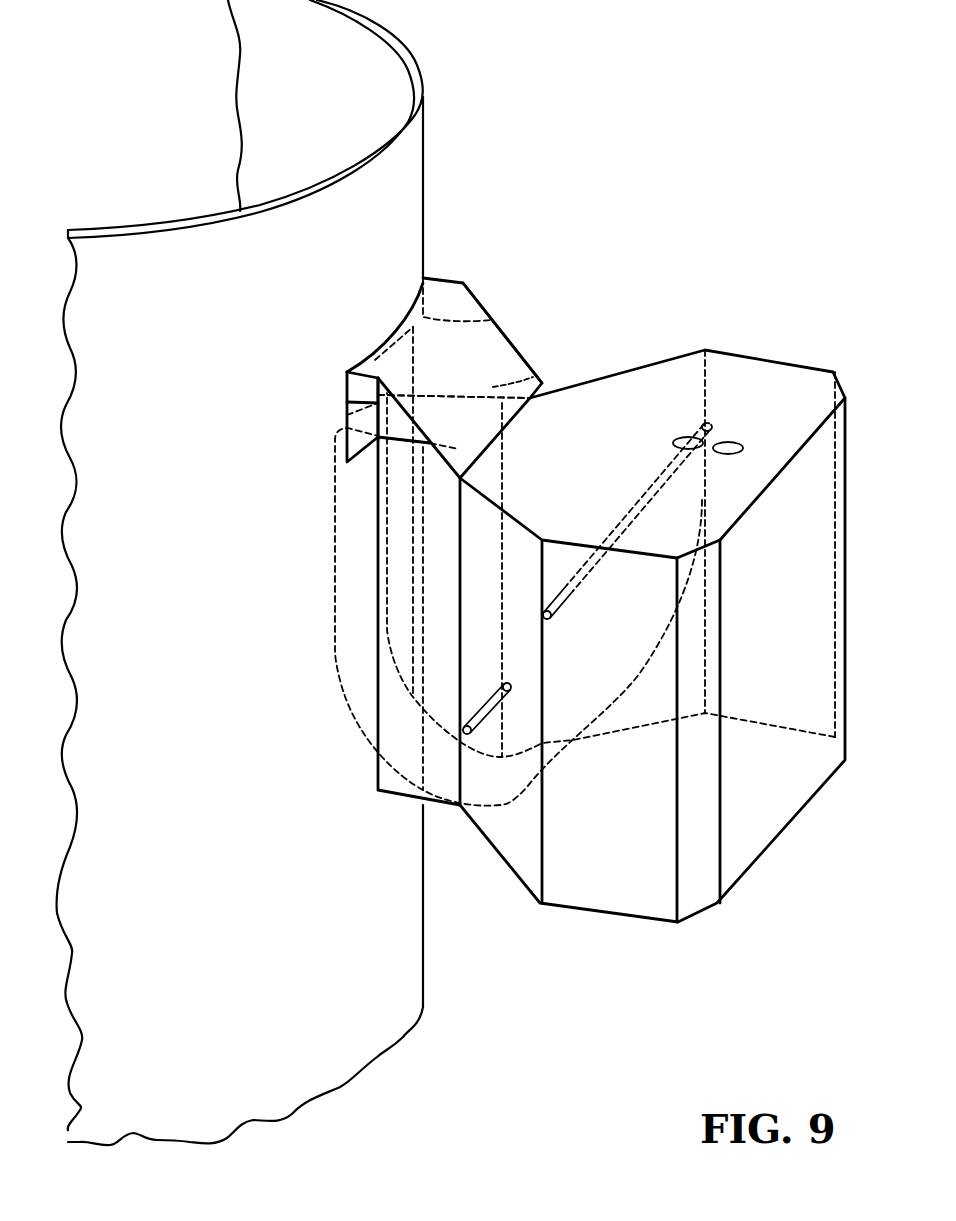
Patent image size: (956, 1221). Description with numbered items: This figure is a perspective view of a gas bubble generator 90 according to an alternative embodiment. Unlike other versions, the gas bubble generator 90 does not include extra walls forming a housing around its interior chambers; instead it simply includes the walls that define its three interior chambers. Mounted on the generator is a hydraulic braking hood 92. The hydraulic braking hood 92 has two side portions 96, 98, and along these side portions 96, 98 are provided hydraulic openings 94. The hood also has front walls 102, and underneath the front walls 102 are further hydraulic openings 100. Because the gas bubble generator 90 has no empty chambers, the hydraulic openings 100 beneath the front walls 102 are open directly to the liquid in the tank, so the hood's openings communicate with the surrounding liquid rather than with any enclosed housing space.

The gas bubble generator 90 is at (814, 348).
The hydraulic braking hood 92 is at (487, 365).
The hydraulic openings 94 is at (468, 347).
The side portion 96 is at (494, 302).
The side portion 98 is at (311, 412).
The hydraulic openings 100 is at (500, 385).
The front walls 102 is at (450, 378).